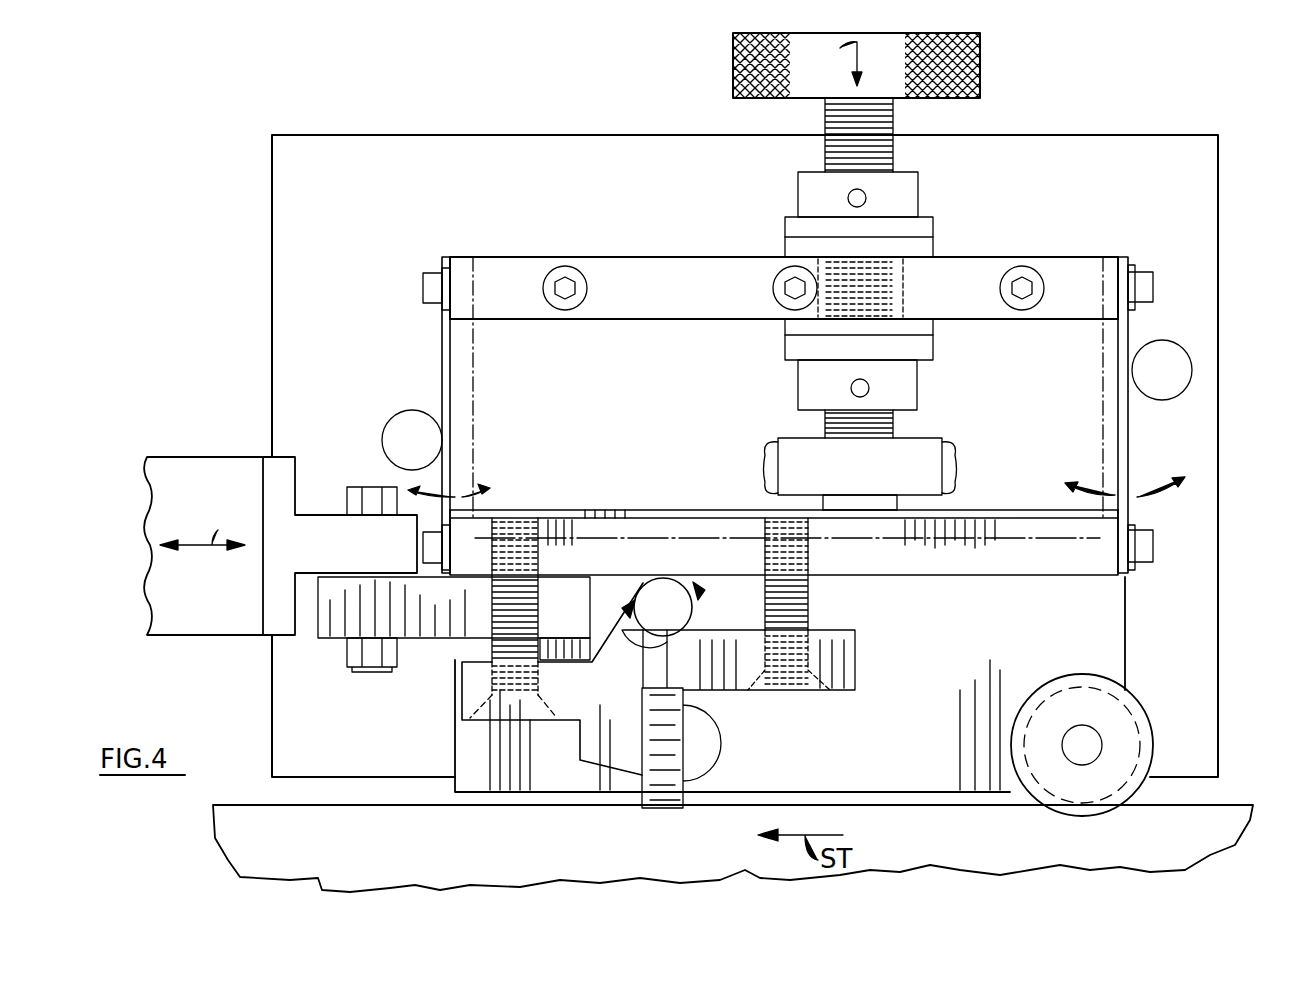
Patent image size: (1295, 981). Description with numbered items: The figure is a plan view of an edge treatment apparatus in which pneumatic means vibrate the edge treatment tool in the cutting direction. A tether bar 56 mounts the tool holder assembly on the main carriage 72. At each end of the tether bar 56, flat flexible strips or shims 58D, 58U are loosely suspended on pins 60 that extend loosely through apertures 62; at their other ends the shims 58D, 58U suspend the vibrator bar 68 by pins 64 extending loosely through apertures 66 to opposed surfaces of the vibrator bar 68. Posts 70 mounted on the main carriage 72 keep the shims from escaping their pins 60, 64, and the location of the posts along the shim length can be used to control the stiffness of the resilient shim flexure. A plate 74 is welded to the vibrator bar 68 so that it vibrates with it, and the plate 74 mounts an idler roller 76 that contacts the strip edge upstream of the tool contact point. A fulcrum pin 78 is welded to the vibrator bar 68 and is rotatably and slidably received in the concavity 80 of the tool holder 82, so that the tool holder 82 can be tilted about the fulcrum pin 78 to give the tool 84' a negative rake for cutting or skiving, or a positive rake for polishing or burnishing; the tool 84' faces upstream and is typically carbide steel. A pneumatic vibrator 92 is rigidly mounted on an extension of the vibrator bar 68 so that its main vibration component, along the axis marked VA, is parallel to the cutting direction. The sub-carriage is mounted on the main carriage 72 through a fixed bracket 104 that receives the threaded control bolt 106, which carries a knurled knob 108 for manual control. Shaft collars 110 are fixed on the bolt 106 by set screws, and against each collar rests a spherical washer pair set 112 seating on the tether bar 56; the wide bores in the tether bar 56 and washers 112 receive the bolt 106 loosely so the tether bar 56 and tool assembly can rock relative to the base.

The knurled knob 108 is at (980, 65).
The threaded control bolt 106 is at (893, 152).
The shaft collars 110 is at (800, 213).
The spherical washer pair set 112 is at (785, 237).
The tether bar 56 is at (1060, 268).
The main carriage 72 is at (1210, 232).
The apertures 62 is at (450, 272).
The pins 60 is at (423, 286).
The flat flexible strip or shim 58D is at (445, 356).
The flat flexible strip or shim 58U is at (1128, 448).
The posts 70 is at (385, 435).
The pneumatic vibrator 92 is at (190, 465).
The pins 64 is at (423, 545).
The apertures 66 is at (450, 550).
The vibrator bar 68 is at (642, 518).
The fixed bracket 104 is at (935, 445).
The fulcrum pin 78 is at (665, 580).
The concavity 80 is at (628, 634).
The tool 84' is at (652, 606).
The tool holder 82 is at (588, 706).
The plate 74 is at (933, 666).
The idler roller 76 is at (1140, 732).